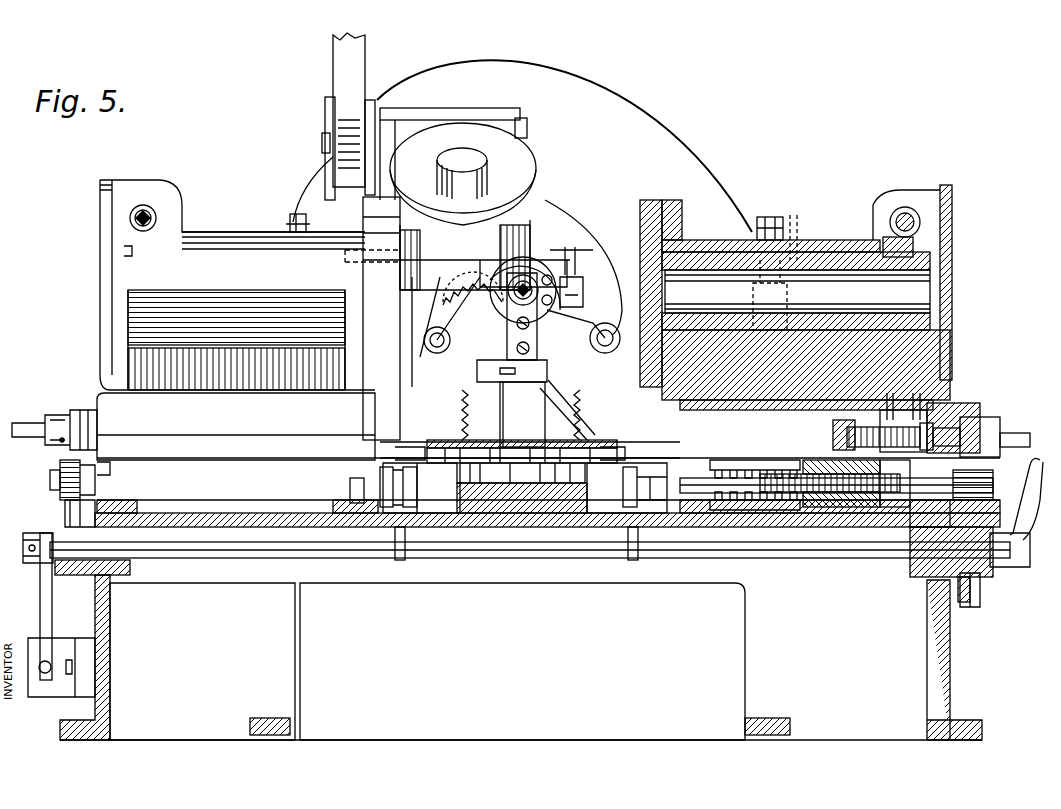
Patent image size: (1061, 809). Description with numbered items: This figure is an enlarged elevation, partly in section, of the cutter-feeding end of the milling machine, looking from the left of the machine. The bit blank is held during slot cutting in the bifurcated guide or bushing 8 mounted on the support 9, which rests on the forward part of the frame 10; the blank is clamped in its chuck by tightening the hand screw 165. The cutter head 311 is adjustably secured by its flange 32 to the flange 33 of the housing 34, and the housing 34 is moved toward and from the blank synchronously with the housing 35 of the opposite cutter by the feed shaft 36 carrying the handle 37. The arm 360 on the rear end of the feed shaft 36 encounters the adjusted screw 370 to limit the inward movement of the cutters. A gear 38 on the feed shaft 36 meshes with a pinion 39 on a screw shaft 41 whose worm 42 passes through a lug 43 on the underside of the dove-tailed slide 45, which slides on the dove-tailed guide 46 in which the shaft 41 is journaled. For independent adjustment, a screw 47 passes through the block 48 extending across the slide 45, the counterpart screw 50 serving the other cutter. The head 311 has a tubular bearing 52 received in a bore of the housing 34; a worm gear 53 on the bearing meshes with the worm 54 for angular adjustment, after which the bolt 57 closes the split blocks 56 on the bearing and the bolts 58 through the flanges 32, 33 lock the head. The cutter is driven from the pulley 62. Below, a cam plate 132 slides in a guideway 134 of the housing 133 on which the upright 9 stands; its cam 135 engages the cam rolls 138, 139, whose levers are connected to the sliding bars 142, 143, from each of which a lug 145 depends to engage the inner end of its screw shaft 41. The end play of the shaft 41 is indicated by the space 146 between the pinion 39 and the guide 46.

The bifurcated guide or bushing 8 is at (530, 355).
The support 9 is at (555, 427).
The frame 10 is at (521, 657).
The flange 32 is at (652, 200).
The flange 33 is at (680, 205).
The housing 34 is at (838, 240).
The housing 35 is at (230, 252).
The feed shaft 36 is at (807, 567).
The handle 37 is at (1020, 523).
The gear 38 is at (62, 508).
The pinion 39 is at (52, 470).
The screw shaft 41 is at (50, 487).
The worm 42 is at (888, 507).
The lug 43 is at (855, 507).
The dove-tailed slide 45 is at (378, 447).
The dove-tailed guide 46 is at (900, 527).
The screw 47 is at (1000, 432).
The block 48 is at (927, 398).
The screw 50 is at (40, 427).
The tubular bearing 52 is at (800, 265).
The worm gear 53 is at (913, 240).
The worm 54 is at (910, 210).
The split blocks 56 is at (792, 215).
The bolt 57 is at (306, 222).
The bolts 58 is at (345, 260).
The pulley 62 is at (373, 103).
The cam plate 132 is at (500, 460).
The housing 133 is at (620, 495).
The guideway 134 is at (462, 480).
The cam 135 is at (530, 445).
The cam roll 138 is at (576, 438).
The cam roll 139 is at (480, 455).
The sliding bar 142 is at (612, 458).
The sliding bar 143 is at (410, 460).
The lug 145 is at (400, 560).
The space 146 is at (105, 467).
The hand screw 165 is at (567, 250).
The head 311 is at (640, 277).
The arm 360 is at (52, 615).
The adjusted screw 370 is at (50, 665).